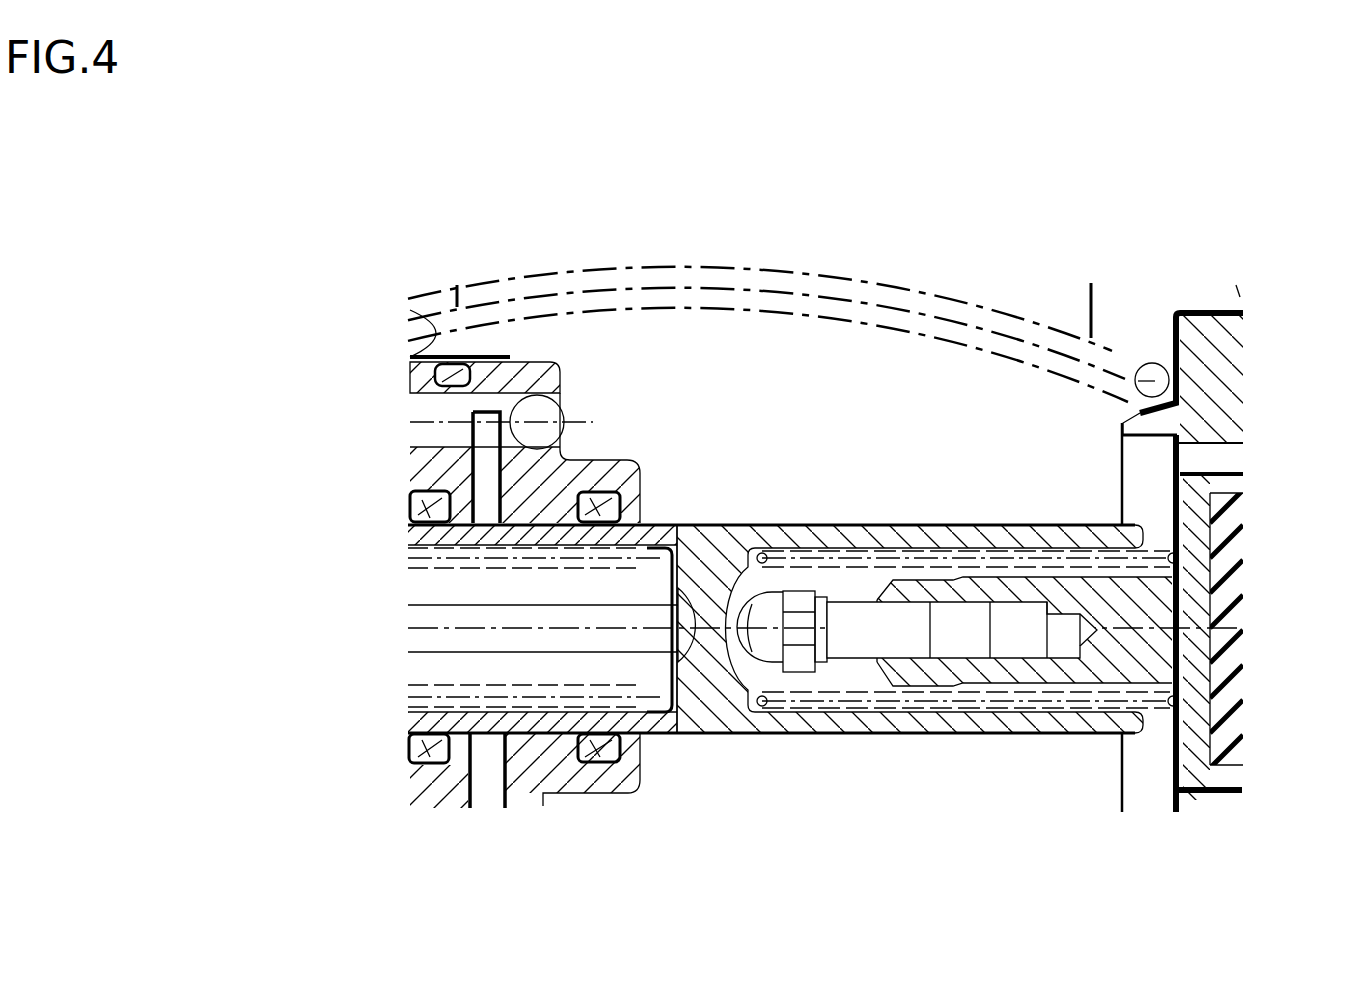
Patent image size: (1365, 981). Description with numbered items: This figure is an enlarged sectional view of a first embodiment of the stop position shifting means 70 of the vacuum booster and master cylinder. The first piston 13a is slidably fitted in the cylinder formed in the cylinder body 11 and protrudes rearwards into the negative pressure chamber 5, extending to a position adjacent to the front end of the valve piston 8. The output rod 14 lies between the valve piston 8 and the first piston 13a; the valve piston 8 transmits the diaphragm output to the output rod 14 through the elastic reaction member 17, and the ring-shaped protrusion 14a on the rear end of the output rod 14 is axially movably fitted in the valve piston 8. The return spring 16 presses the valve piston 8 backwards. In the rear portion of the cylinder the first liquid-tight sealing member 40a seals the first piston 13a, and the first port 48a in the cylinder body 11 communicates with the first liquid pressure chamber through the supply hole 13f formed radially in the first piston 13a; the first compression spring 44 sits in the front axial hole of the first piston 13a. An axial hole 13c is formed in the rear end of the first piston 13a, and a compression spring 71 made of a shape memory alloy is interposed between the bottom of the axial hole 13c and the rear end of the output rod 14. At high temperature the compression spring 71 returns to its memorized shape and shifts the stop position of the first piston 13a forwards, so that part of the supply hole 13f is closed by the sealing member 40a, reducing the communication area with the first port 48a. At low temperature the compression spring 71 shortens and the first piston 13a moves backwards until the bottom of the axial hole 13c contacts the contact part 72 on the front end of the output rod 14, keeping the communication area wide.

The negative pressure chamber 5 is at (813, 437).
The valve piston 8 is at (1208, 310).
The cylinder body 11 is at (530, 780).
The first piston 13a is at (690, 700).
The axial hole 13c is at (958, 712).
The supply hole 13f is at (438, 530).
The output rod 14 is at (1100, 647).
The ring-shaped protrusion 14a is at (1187, 793).
The return spring 16 is at (718, 268).
The reaction member 17 is at (1225, 553).
The first liquid-tight sealing member 40a is at (420, 502).
The first compression spring 44 is at (447, 687).
The first port 48a is at (485, 508).
The stop position shifting means 70 is at (798, 740).
The compression spring 71 is at (843, 712).
The contact part 72 is at (716, 700).